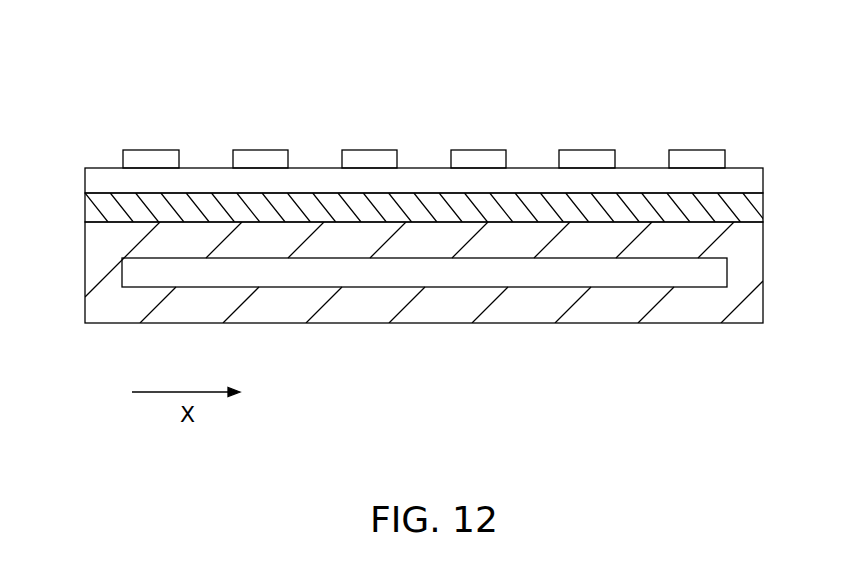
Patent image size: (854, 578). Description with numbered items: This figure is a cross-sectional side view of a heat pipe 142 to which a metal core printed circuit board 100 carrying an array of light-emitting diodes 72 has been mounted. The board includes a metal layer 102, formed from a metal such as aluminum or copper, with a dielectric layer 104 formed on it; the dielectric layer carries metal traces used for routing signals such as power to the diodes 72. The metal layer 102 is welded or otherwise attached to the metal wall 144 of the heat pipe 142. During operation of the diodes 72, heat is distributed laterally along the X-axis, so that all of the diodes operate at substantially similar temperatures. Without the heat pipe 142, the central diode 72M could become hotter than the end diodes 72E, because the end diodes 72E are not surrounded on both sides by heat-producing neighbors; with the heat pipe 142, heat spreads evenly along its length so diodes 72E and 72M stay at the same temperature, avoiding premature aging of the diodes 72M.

The light-emitting diodes 72 is at (677, 121).
The end diodes 72E is at (156, 150).
The central diode 72M is at (478, 150).
The metal core printed circuit board 100 is at (423, 198).
The metal layer 102 is at (90, 212).
The dielectric layer 104 is at (90, 182).
The heat pipe 142 is at (460, 307).
The metal wall 144 is at (402, 240).